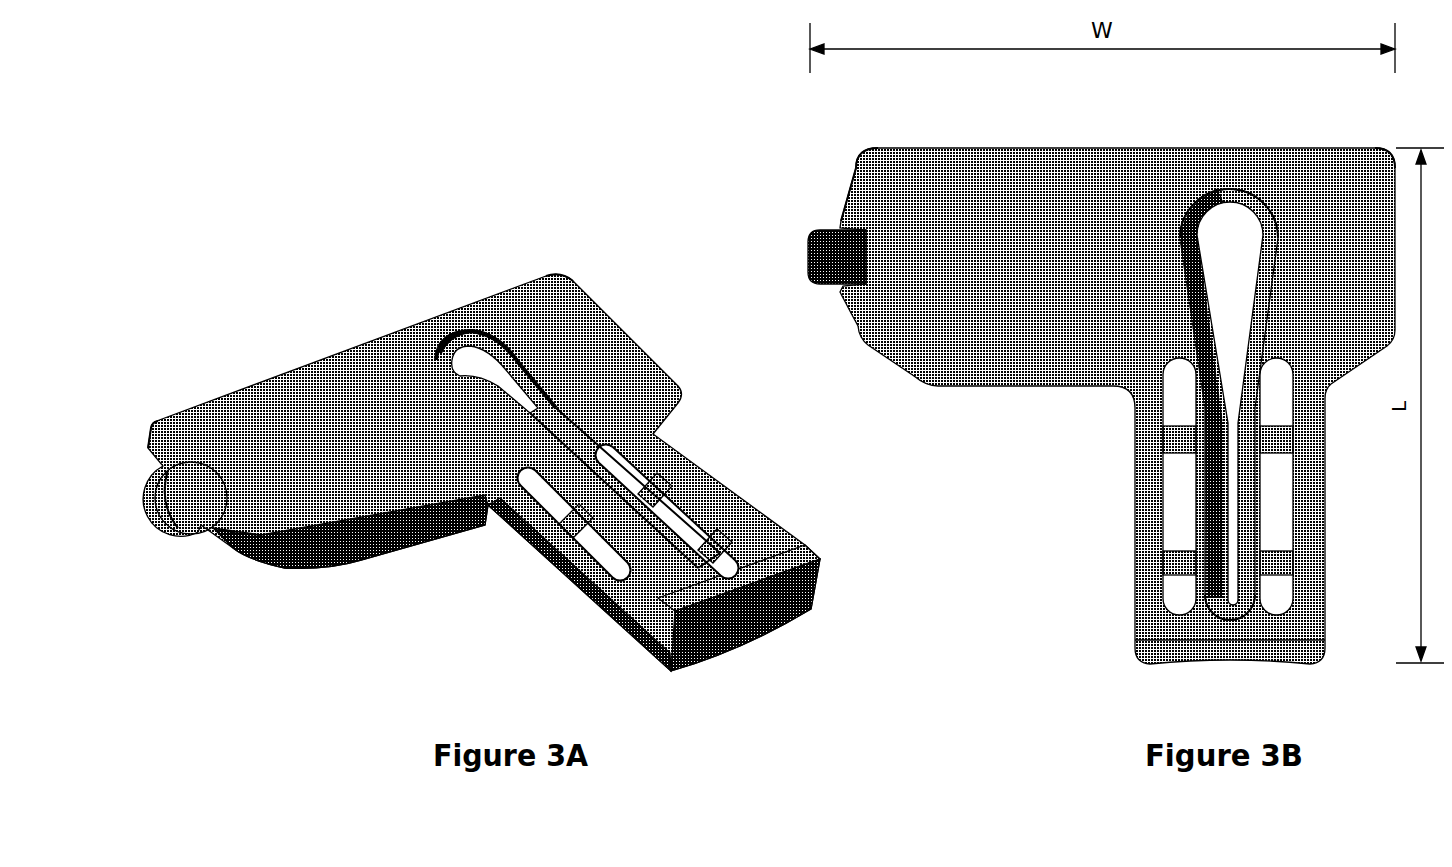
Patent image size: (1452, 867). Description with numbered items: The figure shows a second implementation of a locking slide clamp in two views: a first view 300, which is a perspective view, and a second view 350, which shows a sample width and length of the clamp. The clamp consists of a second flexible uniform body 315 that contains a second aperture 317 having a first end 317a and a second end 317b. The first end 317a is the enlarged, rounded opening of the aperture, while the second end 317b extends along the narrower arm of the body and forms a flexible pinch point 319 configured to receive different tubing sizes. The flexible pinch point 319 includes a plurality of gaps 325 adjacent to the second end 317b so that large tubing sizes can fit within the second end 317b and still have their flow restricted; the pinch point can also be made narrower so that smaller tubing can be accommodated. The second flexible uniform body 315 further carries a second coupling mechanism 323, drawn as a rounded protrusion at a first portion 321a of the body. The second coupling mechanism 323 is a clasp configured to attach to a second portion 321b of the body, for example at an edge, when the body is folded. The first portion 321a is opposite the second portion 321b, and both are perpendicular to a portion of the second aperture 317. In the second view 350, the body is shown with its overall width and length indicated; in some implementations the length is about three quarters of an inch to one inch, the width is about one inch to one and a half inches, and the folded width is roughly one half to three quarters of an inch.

In FIG. 3A, the first view 300 is at (487, 383).
In FIG. 3B, the second view 350 is at (1057, 376).
In FIG. 3A, the second flexible uniform body 315 is at (348, 390).
In FIG. 3B, the second flexible uniform body 315 is at (1087, 172).
In FIG. 3A, the second aperture 317 is at (656, 388).
In FIG. 3B, the second aperture 317 is at (1283, 354).
In FIG. 3A, the first end of the second aperture 317a is at (460, 332).
In FIG. 3B, the first end of the second aperture 317a is at (1198, 186).
In FIG. 3A, the second end of the second aperture 317b is at (667, 562).
In FIG. 3B, the second end of the second aperture 317b is at (1220, 576).
In FIG. 3A, the flexible pinch point 319 is at (560, 508).
In FIG. 3B, the flexible pinch point 319 is at (1153, 486).
In FIG. 3A, the first portion of the flexible uniform body 321a is at (188, 425).
In FIG. 3B, the first portion of the flexible uniform body 321a is at (862, 170).
In FIG. 3A, the second portion of the flexible uniform body 321b is at (540, 290).
In FIG. 3B, the second portion of the flexible uniform body 321b is at (1348, 170).
In FIG. 3A, the second coupling mechanism 323 is at (163, 493).
In FIG. 3B, the second coupling mechanism 323 is at (801, 250).
In FIG. 3A, the gaps 325 is at (610, 550).
In FIG. 3B, the gaps 325 is at (1228, 500).